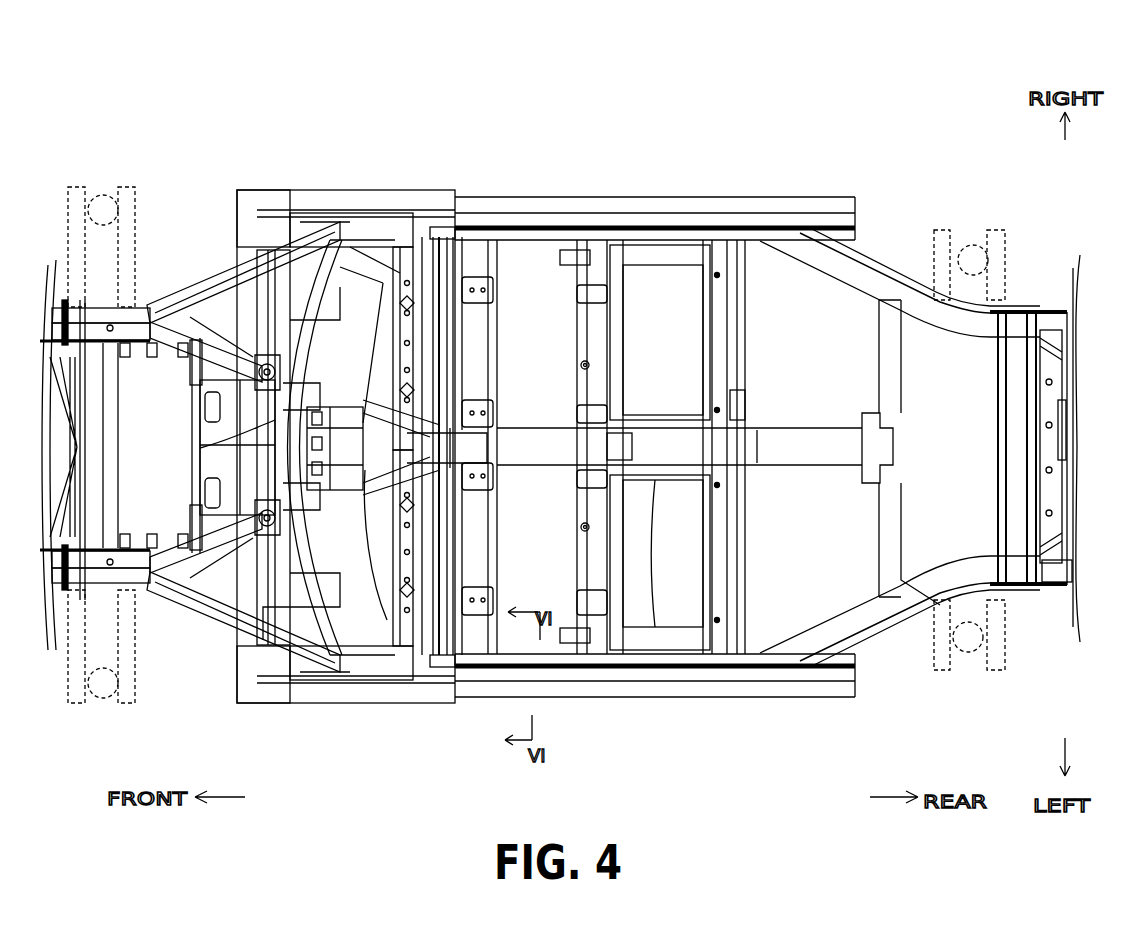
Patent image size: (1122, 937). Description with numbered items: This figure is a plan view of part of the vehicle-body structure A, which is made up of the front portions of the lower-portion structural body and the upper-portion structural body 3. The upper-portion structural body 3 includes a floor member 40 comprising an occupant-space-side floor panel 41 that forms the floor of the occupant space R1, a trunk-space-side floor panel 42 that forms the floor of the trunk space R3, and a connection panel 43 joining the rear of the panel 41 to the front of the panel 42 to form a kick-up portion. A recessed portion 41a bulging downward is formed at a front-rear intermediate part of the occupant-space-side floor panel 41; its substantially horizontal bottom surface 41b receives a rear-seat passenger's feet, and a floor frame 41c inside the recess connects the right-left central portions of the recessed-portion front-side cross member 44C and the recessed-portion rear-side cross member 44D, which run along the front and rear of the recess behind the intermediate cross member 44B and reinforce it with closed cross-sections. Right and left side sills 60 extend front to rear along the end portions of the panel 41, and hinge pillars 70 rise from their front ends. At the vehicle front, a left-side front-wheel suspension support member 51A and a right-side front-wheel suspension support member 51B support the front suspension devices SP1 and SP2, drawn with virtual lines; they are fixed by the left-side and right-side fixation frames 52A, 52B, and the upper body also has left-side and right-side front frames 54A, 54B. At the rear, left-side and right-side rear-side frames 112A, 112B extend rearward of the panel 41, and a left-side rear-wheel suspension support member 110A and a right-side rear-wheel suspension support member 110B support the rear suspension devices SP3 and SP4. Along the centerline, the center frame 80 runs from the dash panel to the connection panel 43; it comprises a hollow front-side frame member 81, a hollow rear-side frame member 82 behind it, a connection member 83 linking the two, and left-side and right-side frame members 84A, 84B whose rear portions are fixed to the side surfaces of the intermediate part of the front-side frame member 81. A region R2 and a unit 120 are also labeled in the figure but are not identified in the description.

The upper-portion structural body 3 is at (800, 160).
The floor member 40 is at (518, 280).
The occupant-space-side floor panel 41 is at (557, 240).
The recessed portion 41a is at (668, 285).
The bottom surface 41b is at (637, 625).
The floor frame 41c is at (662, 630).
The trunk-space-side floor panel 42 is at (950, 347).
The connection panel 43 is at (893, 322).
The intermediate cross member 44B is at (483, 277).
The recessed-portion front-side cross member 44C is at (592, 615).
The recessed-portion rear-side cross member 44D is at (740, 660).
The left-side front-wheel suspension support member 51A is at (105, 590).
The right-side front-wheel suspension support member 51B is at (105, 300).
The left-side fixation frame 52A is at (212, 590).
The right-side fixation frame 52B is at (220, 290).
The left-side front frame 54A is at (190, 605).
The right-side front frame 54B is at (195, 300).
The side sill 60 is at (710, 197).
The hinge pillar 70 is at (360, 213).
The center frame 80 is at (810, 450).
The front-side frame member 81 is at (443, 227).
The rear-side frame member 82 is at (760, 445).
The connection member 83 is at (490, 447).
The left-side frame member 84A is at (392, 646).
The right-side frame member 84B is at (392, 247).
The left-side rear-wheel suspension support member 110A is at (1013, 587).
The right-side rear-wheel suspension support member 110B is at (1028, 300).
The left-side rear-side frame 112A is at (1052, 587).
The right-side rear-side frame 112B is at (1053, 310).
The electric motor unit 120 is at (270, 190).
The vehicle-body structure A is at (524, 105).
The occupant space R1 is at (526, 319).
The front motor room R2 is at (162, 445).
The trunk space R3 is at (950, 440).
The front suspension device SP1 is at (82, 703).
The front suspension device SP2 is at (85, 187).
The rear suspension device SP3 is at (1002, 587).
The rear suspension device SP4 is at (1000, 230).